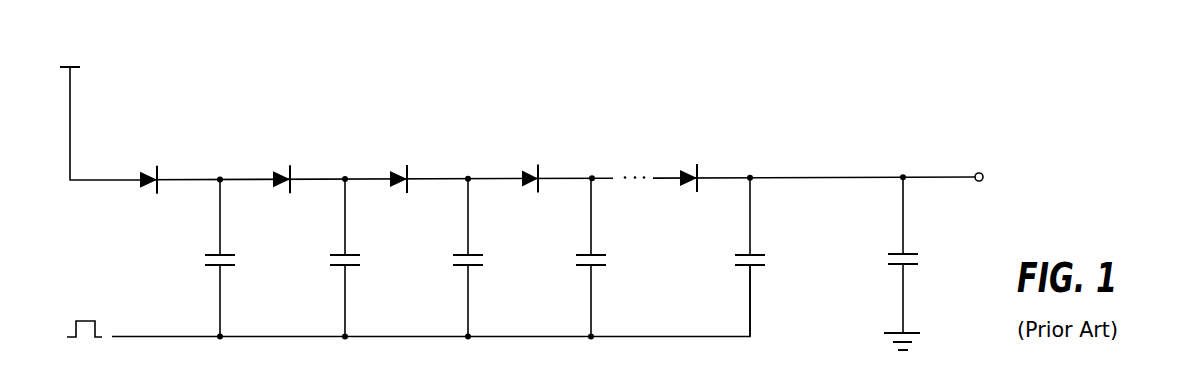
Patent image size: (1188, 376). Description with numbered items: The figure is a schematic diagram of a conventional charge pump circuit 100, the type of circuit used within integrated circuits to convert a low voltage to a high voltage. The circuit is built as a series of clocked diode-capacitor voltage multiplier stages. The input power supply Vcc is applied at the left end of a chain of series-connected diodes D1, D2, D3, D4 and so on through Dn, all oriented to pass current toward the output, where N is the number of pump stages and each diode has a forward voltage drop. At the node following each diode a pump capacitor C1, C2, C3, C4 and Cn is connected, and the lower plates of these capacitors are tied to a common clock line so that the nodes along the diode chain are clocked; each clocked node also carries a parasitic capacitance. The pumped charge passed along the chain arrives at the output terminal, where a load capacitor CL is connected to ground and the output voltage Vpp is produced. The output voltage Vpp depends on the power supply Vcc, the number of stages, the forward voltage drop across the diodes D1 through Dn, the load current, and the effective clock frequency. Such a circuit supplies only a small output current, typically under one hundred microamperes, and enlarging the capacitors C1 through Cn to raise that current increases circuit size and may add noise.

The charge pump circuit 100 is at (452, 106).
The diode D1 is at (146, 166).
The diode D2 is at (279, 166).
The diode D3 is at (396, 166).
The diode D4 is at (528, 166).
The diode Dn is at (687, 166).
The capacitor C1 is at (215, 267).
The capacitor C2 is at (340, 267).
The capacitor C3 is at (463, 267).
The capacitor C4 is at (586, 267).
The capacitor Cn is at (745, 267).
The load capacitor CL is at (916, 263).
The power supply Vcc is at (96, 105).
The output voltage Vpp is at (978, 154).